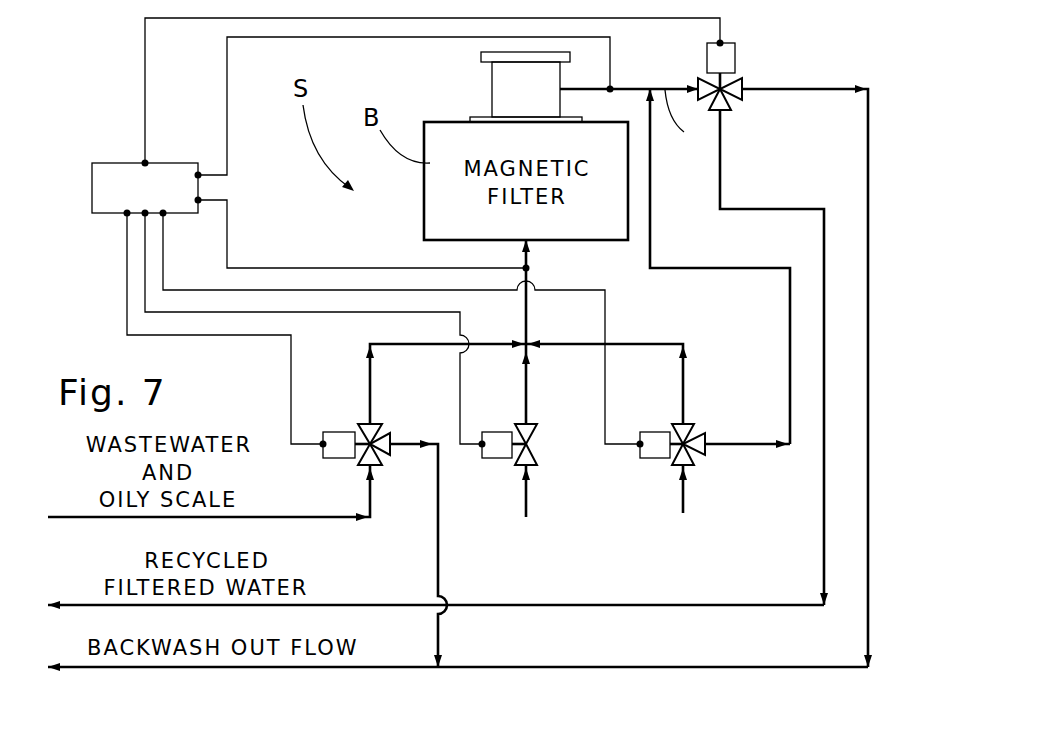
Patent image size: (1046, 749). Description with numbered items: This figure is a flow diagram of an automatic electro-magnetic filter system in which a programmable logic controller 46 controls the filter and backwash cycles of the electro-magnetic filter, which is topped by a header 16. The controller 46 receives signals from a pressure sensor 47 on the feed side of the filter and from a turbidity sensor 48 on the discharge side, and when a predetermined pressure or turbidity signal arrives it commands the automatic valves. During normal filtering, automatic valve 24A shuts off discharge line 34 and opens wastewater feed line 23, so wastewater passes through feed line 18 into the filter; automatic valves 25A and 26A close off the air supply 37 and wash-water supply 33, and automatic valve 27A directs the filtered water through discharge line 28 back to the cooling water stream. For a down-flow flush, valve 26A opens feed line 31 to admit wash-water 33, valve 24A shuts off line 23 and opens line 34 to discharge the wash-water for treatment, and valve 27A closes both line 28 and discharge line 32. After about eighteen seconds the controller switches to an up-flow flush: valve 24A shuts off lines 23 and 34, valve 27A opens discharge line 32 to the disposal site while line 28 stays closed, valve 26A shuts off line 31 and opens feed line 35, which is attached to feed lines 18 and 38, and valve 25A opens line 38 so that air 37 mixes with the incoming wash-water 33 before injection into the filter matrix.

The programmable logic controller 46 is at (100, 172).
The header 16 is at (498, 97).
The turbidity sensor 48 is at (618, 84).
The automatic valve 27A is at (742, 80).
The discharge line 28 is at (722, 175).
The discharge line 32 is at (865, 195).
The feed line 31 is at (692, 267).
The feed line 35 is at (655, 340).
The pressure sensor 47 is at (530, 268).
The feed line 18 is at (529, 312).
The air line 38 is at (530, 395).
The automatic valve 24A is at (365, 432).
The automatic valve 25A is at (540, 452).
The automatic valve 26A is at (700, 432).
The wastewater feed line 23 is at (297, 515).
The discharge line 34 is at (440, 535).
The air supply 37 is at (527, 525).
The wash-water supply 33 is at (689, 524).